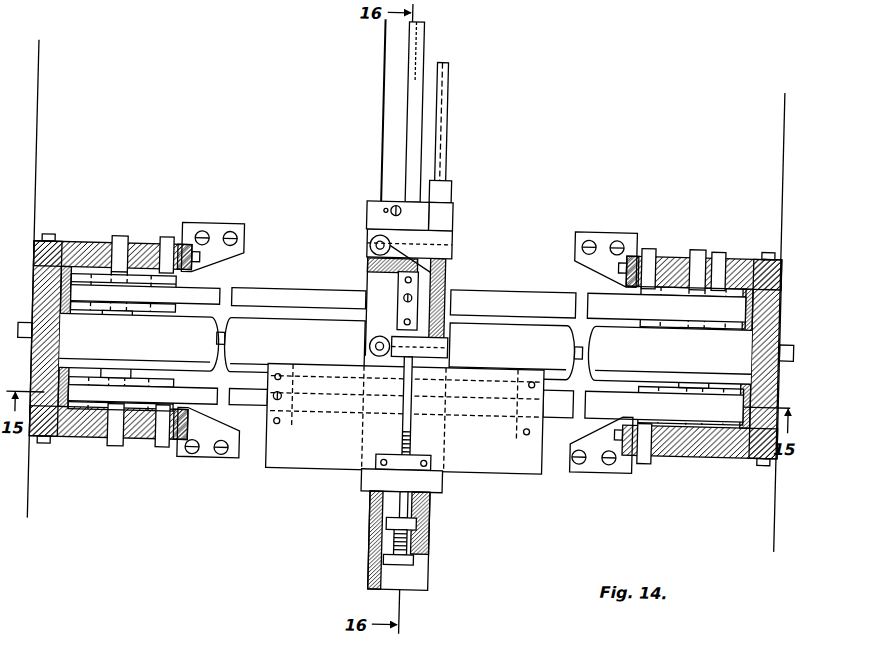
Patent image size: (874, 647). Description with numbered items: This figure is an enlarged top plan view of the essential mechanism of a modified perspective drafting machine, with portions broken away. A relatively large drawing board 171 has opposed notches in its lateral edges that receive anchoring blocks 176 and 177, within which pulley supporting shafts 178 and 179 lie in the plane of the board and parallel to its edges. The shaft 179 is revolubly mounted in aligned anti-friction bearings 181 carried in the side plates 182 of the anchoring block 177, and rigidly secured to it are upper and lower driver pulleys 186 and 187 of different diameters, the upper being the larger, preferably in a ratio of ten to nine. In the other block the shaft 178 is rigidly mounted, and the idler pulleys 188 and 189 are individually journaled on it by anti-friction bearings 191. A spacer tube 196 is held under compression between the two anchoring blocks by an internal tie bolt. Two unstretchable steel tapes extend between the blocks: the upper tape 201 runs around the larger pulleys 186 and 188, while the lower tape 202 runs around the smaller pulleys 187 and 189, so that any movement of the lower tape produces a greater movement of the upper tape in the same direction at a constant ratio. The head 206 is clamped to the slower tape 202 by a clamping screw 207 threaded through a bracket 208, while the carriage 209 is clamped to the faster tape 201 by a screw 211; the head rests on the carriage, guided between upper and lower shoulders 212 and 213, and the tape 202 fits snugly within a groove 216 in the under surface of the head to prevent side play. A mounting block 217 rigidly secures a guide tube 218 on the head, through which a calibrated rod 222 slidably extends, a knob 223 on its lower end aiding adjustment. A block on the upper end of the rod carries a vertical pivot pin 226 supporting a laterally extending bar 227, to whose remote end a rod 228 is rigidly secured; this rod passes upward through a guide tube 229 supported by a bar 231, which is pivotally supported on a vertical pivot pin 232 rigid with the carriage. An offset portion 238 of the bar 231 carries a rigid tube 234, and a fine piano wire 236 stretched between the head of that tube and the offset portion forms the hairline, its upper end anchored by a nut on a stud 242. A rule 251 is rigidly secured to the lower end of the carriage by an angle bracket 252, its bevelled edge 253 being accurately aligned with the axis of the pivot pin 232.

The drawing board 171 is at (33, 116).
The anchoring block 176 is at (90, 226).
The anchoring block 177 is at (666, 249).
The pulley supporting shaft 178 is at (120, 249).
The pulley supporting shaft 179 is at (698, 243).
The anti-friction bearings 181 is at (706, 258).
The side plates 182 is at (757, 251).
The upper driver pulley 186 is at (672, 321).
The lower driver pulley 187 is at (722, 423).
The idler pulley 188 is at (131, 282).
The idler pulley 189 is at (140, 418).
The anti-friction bearings 191 is at (100, 444).
The spacer tube 196 is at (506, 330).
The upper tape 201 is at (262, 296).
The lower tape 202 is at (240, 410).
The head 206 is at (504, 470).
The clamping screw 207 is at (284, 399).
The bracket 208 is at (280, 427).
The carriage 209 is at (446, 282).
The screw 211 is at (404, 297).
The upper shoulder 212 is at (392, 367).
The lower shoulder 213 is at (365, 470).
The groove 216 is at (342, 412).
The mounting block 217 is at (435, 463).
The guide tube 218 is at (404, 500).
The rod 222 is at (414, 422).
The knob 223 is at (392, 561).
The vertical pivot pin 226 is at (375, 346).
The laterally extending bar 227 is at (440, 343).
The rod 228 is at (442, 78).
The guide tube 229 is at (444, 190).
The laterally extending bar 231 is at (445, 240).
The vertical pivot pin 232 is at (369, 243).
The rigid tube 234 is at (416, 38).
The piano wire 236 is at (376, 53).
The offset portion 238 is at (365, 211).
The stud 242 is at (391, 208).
The rule 251 is at (425, 580).
The angle bracket 252 is at (366, 488).
The edge 253 is at (376, 547).